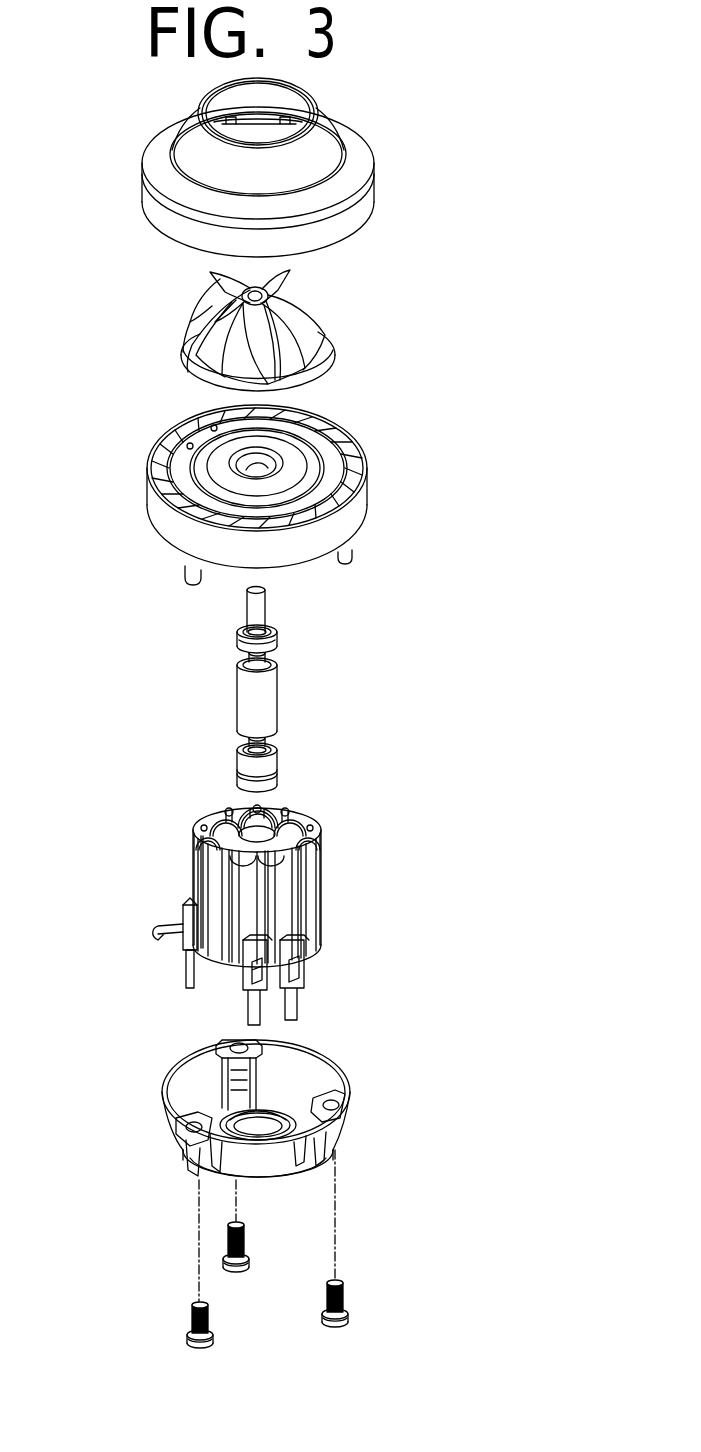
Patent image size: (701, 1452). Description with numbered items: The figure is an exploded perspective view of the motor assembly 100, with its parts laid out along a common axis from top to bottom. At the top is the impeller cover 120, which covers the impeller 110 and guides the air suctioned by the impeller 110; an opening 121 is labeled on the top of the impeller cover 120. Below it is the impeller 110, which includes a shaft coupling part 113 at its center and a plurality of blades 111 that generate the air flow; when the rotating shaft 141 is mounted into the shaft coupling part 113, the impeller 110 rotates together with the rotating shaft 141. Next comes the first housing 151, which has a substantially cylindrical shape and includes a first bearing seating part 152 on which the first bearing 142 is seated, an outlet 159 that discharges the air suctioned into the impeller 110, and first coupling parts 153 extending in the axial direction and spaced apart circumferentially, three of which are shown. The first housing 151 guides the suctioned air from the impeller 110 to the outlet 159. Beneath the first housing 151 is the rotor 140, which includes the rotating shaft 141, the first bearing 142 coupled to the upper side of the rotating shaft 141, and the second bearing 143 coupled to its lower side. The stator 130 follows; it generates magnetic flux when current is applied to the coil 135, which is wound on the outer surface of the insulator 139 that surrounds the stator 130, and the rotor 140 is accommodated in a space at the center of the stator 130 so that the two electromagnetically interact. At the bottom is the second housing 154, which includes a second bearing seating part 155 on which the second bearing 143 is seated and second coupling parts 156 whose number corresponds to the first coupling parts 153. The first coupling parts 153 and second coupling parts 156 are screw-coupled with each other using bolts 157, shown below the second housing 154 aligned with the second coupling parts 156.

The motor assembly 100 is at (93, 102).
The impeller cover 120 is at (313, 163).
The inlet opening 121 is at (270, 100).
The impeller 110 is at (274, 330).
The shaft coupling part 113 is at (206, 287).
The blades 111 is at (194, 342).
The first housing 151 is at (319, 486).
The first bearing seating part 152 is at (262, 460).
The outlet 159 is at (358, 462).
The first coupling part 153 is at (347, 557).
The rotor 140 is at (320, 690).
The rotating shaft 141 is at (264, 613).
The first bearing 142 is at (273, 648).
The second bearing 143 is at (273, 762).
The stator 130 is at (298, 910).
The coil 135 is at (293, 821).
The insulator 139 is at (312, 838).
The second housing 154 is at (314, 1158).
The second coupling part 156 is at (333, 1092).
The second bearing seating part 155 is at (336, 1134).
The bolt 157 is at (236, 1272).